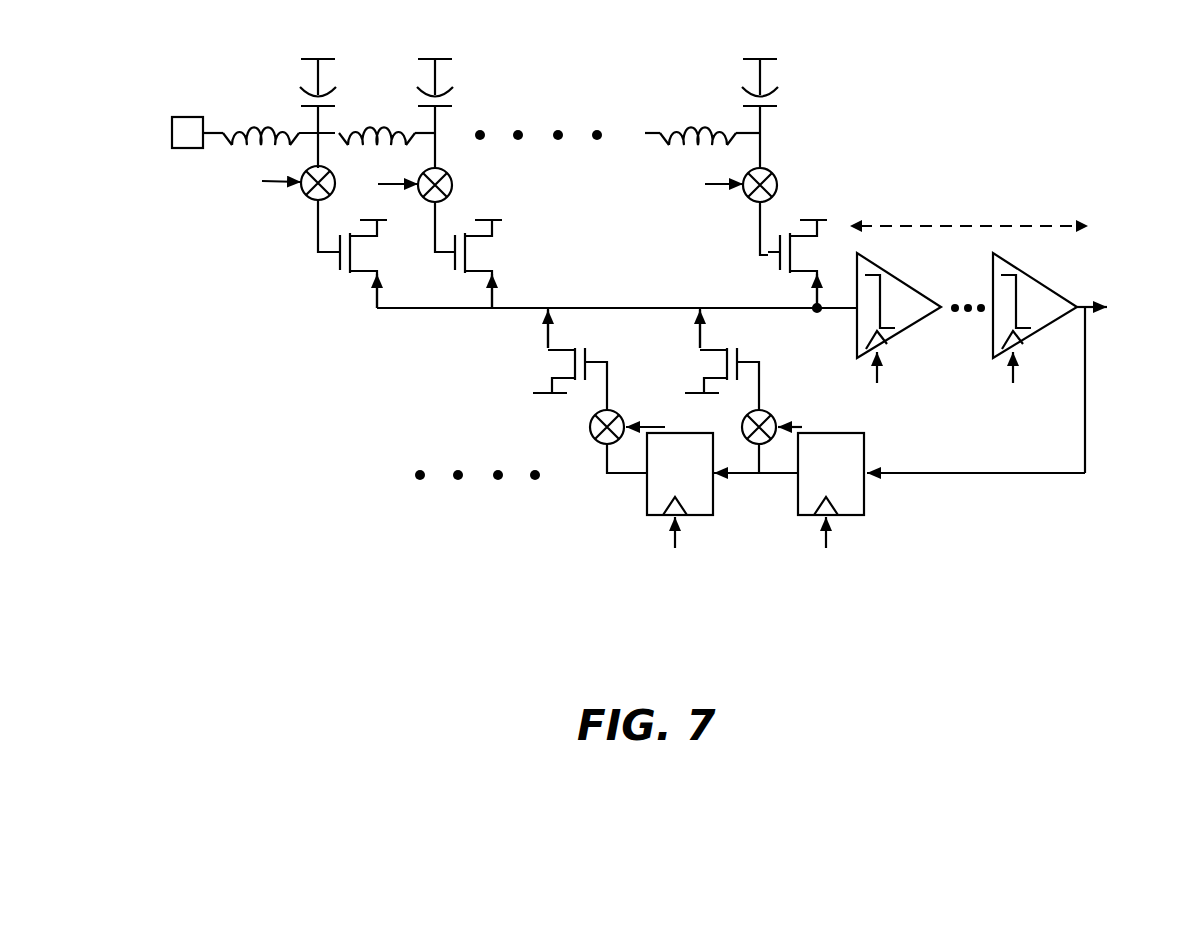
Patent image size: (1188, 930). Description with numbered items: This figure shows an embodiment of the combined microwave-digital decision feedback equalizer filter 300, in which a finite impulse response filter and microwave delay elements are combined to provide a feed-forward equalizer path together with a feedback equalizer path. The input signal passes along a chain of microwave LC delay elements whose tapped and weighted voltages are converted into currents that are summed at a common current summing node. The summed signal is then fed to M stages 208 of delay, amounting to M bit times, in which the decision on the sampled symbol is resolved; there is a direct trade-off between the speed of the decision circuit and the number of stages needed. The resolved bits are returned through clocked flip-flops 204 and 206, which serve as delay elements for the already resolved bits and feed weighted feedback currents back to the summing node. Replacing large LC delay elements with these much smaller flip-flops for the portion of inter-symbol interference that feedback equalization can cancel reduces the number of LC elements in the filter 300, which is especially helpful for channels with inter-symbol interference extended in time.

The filter 300 is at (655, 647).
The M stages 208 is at (943, 160).
The clocked flip-flop 206 is at (680, 490).
The clocked flip-flop 204 is at (831, 490).